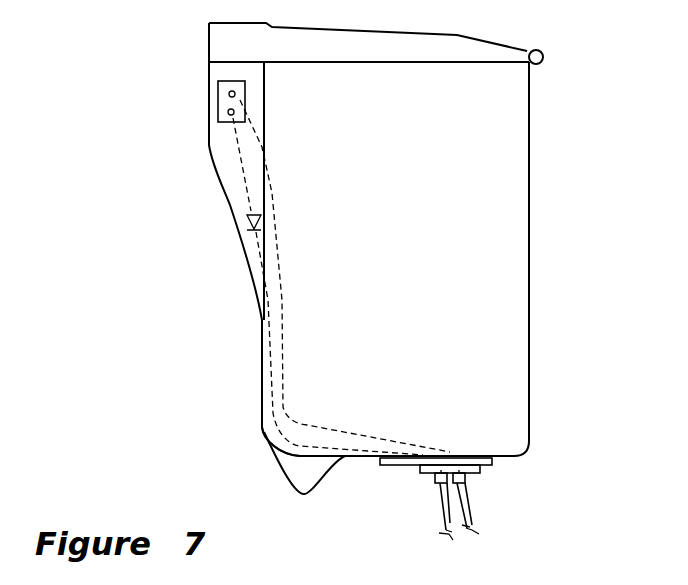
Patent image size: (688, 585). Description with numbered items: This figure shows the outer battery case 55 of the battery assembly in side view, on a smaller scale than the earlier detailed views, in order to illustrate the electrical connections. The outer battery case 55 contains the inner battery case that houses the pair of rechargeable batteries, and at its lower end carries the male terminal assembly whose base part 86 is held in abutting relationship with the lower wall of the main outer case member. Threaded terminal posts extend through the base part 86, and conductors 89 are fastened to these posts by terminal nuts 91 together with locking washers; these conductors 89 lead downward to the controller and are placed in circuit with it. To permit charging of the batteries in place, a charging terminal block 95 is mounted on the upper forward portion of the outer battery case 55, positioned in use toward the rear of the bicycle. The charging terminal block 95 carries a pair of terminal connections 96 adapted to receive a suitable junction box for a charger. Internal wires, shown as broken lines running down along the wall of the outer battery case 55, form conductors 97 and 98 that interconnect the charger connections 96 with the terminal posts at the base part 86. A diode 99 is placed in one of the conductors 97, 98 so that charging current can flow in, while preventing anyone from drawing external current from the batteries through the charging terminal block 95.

The outer battery case 55 is at (541, 200).
The charging terminal block 95 is at (218, 103).
The terminal connections 96 is at (229, 93).
The diode 99 is at (247, 222).
The conductor 98 is at (317, 423).
The conductor 97 is at (278, 418).
The base part 86 is at (480, 478).
The terminal nuts 91 is at (437, 480).
The conductors 89 is at (468, 508).